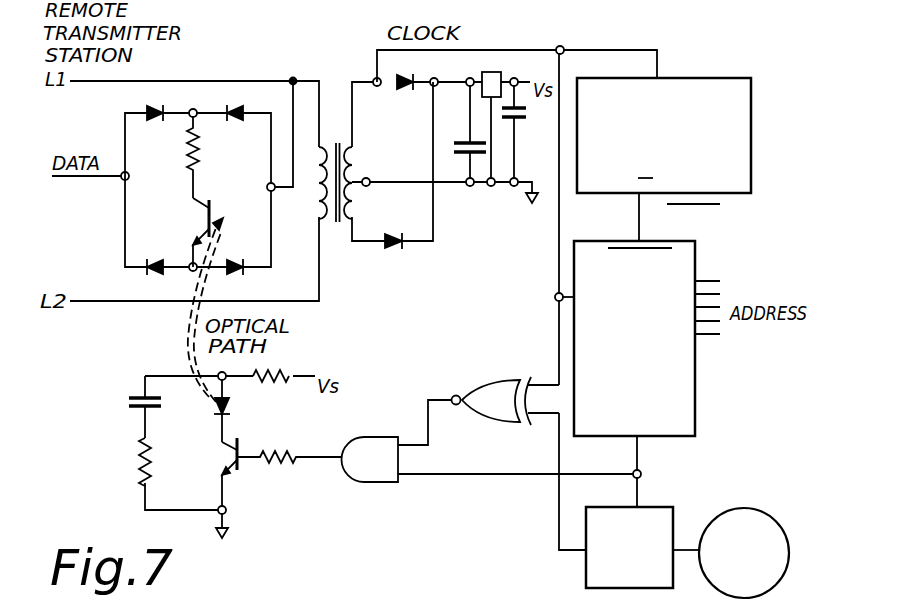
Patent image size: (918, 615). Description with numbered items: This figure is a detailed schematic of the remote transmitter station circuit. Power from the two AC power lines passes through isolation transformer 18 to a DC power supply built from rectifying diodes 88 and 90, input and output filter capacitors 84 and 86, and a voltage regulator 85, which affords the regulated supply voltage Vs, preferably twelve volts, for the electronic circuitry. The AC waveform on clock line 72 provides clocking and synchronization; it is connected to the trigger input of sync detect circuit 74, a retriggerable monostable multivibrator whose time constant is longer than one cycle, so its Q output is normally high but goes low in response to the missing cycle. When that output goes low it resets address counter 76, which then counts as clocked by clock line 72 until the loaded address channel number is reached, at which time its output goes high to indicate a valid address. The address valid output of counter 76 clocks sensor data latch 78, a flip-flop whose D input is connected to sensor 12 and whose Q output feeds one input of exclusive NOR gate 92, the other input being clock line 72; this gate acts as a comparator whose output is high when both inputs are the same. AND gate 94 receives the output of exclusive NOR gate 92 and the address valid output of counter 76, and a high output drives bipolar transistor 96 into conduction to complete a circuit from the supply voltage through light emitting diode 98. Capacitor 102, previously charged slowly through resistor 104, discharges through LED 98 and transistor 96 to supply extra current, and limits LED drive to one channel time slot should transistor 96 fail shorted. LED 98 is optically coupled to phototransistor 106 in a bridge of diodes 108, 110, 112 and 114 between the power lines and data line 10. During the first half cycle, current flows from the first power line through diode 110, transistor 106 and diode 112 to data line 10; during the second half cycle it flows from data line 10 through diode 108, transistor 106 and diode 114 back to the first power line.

The data line 10 is at (103, 179).
The sensor 12 is at (758, 513).
The isolation transformer 18 is at (333, 90).
The clock line 72 is at (517, 50).
The retriggerable monostable multivibrator 74 is at (752, 100).
The address counter 76 is at (696, 380).
The sensor data latch 78 is at (671, 506).
The input filter capacitor 84 is at (463, 135).
The voltage regulator 85 is at (499, 70).
The output filter capacitor 86 is at (530, 114).
The rectifying diode 88 is at (408, 88).
The rectifying diode 90 is at (395, 250).
The exclusive NOR gate 92 is at (502, 380).
The AND gate 94 is at (369, 438).
The bipolar transistor 96 is at (230, 458).
The light emitting diode 98 is at (233, 408).
The capacitor 102 is at (127, 402).
The resistor 104 is at (130, 458).
The phototransistor 106 is at (204, 214).
The diode 108 is at (165, 118).
The diode 110 is at (248, 118).
The diode 112 is at (152, 275).
The diode 114 is at (243, 273).